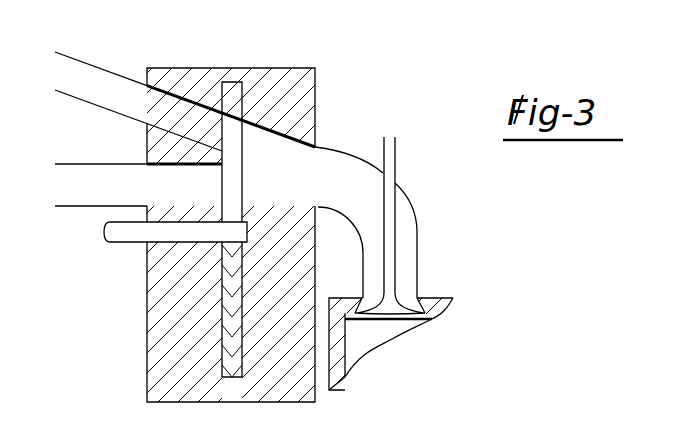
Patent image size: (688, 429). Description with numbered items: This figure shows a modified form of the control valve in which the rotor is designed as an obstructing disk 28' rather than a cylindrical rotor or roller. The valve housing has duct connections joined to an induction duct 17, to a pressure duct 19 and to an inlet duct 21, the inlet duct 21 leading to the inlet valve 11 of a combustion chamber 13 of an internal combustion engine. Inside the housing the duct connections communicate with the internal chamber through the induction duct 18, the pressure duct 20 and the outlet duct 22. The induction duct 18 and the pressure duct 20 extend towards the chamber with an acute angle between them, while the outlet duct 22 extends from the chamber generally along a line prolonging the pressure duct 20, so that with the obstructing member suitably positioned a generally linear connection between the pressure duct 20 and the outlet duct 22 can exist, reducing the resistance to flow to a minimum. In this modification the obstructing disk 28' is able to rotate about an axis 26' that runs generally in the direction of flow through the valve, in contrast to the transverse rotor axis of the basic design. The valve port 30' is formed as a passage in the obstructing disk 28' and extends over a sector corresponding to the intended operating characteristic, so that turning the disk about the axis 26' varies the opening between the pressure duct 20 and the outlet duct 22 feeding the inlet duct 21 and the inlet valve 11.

The inlet valve 11 is at (387, 255).
The combustion chamber 13 is at (388, 327).
The induction duct 17 is at (92, 80).
The induction duct 18 is at (173, 113).
The pressure duct 19 is at (68, 182).
The pressure duct 20 is at (180, 180).
The inlet duct 21 is at (358, 189).
The outlet duct 22 is at (300, 180).
The axis 26' is at (159, 268).
The obstructing disk 28' is at (157, 230).
The valve port 30' is at (346, 147).